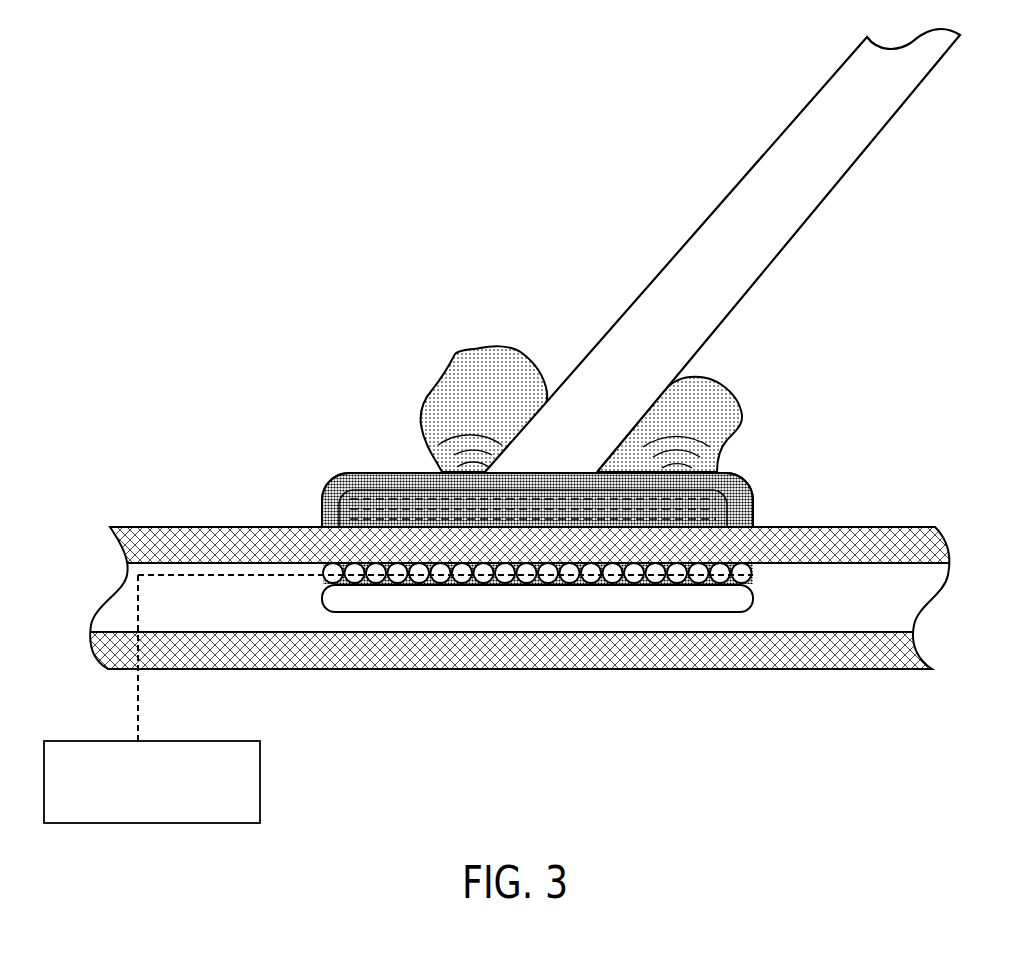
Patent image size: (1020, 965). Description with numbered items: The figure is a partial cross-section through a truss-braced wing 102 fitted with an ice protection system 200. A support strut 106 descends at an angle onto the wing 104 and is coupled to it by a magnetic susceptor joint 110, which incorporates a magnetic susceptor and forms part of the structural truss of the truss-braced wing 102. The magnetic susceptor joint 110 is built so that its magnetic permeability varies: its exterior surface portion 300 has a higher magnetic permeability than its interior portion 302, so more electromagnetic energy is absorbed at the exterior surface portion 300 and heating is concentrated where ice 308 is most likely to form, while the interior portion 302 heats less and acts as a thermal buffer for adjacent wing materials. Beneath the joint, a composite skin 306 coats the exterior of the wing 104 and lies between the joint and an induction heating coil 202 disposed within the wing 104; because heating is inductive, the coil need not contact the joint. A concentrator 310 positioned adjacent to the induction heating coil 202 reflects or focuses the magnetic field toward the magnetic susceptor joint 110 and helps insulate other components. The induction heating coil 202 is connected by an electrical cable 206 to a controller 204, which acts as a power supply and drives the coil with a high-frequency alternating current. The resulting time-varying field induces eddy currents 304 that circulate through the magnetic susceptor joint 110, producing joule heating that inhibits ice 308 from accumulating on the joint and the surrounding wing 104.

The truss-braced wing 102 is at (767, 688).
The wing 104 is at (323, 670).
The support strut 106 is at (738, 183).
The magnetic susceptor joint 110 is at (337, 488).
The ice protection system 200 is at (519, 481).
The induction heating coil 202 is at (764, 575).
The controller 204 is at (238, 795).
The electrical cable 206 is at (267, 574).
The exterior surface portion 300 is at (735, 478).
The interior portion 302 is at (714, 510).
The eddy currents 304 is at (415, 495).
The composite skin 306 is at (217, 527).
The ice 308 is at (712, 382).
The concentrator 310 is at (366, 612).